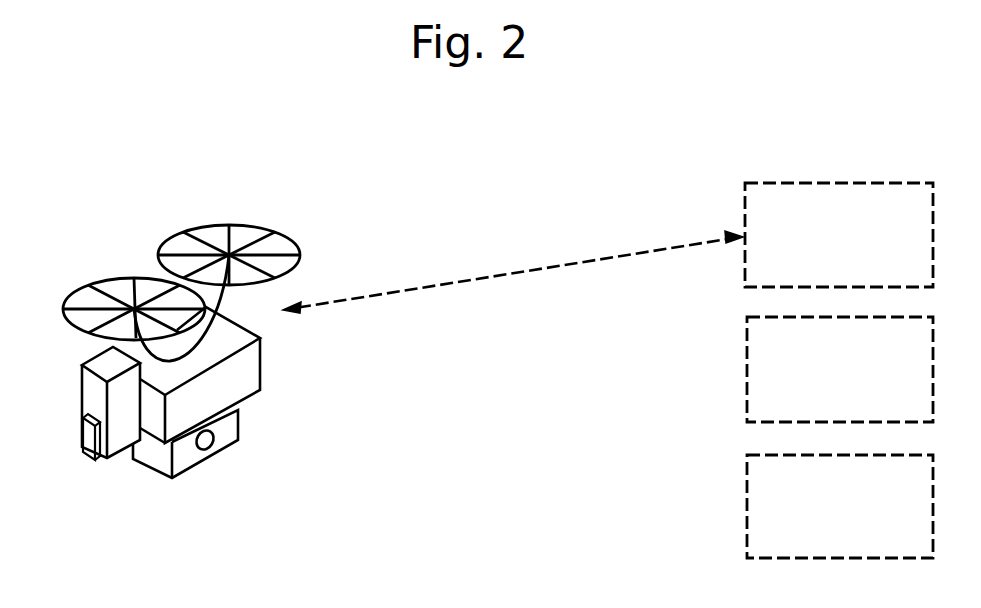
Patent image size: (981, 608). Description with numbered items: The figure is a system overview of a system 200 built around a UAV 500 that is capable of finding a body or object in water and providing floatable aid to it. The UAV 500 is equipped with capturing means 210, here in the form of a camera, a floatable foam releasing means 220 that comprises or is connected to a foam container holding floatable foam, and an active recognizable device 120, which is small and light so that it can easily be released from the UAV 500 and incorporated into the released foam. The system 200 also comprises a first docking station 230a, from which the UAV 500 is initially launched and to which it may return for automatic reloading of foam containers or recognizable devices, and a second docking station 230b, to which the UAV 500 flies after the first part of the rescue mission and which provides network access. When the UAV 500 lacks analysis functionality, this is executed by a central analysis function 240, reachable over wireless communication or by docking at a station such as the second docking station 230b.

The system 200 is at (103, 141).
The UAV 500 is at (309, 372).
The capturing means 210 is at (225, 437).
The floatable foam releasing means 220 is at (88, 390).
The active recognizable device 120 is at (84, 456).
The central analysis function 240 is at (802, 183).
The first docking station 230a is at (746, 482).
The second docking station 230b is at (746, 343).